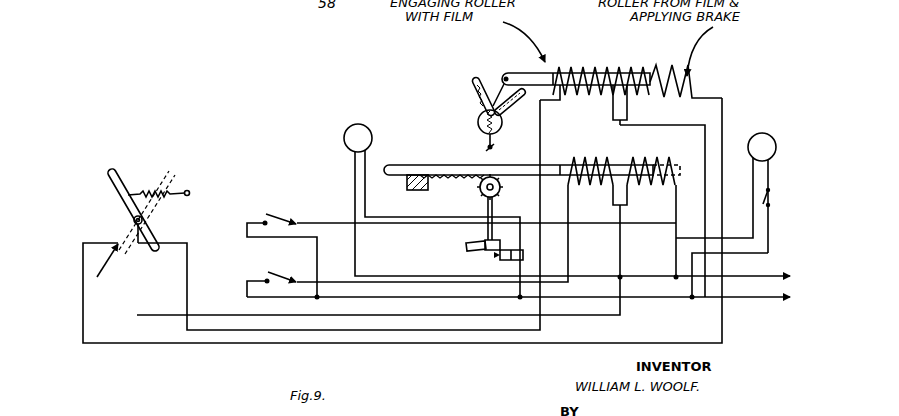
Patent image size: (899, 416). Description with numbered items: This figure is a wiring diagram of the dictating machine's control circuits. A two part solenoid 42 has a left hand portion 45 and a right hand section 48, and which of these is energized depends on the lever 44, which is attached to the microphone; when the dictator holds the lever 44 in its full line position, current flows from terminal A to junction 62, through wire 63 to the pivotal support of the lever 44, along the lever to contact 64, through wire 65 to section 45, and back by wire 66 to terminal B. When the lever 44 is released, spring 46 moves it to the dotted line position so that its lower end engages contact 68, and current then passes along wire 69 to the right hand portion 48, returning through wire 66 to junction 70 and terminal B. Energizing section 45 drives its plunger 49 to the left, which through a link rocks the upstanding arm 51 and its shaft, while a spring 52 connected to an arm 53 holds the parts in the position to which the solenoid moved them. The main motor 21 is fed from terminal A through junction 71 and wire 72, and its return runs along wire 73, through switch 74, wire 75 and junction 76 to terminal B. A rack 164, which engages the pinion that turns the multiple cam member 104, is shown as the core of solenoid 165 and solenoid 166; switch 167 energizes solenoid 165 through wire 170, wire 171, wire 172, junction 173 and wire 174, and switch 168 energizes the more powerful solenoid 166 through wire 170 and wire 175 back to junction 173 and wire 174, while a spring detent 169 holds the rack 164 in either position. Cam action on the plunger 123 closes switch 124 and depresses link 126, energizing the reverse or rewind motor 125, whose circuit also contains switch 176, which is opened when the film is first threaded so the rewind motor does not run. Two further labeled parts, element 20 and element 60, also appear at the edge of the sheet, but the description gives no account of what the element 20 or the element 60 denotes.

The rack bar and pinion 20 is at (496, 180).
The motor 21 is at (772, 141).
The two part solenoid 42 is at (703, 72).
The lever 44 is at (125, 208).
The left hand portion of the solenoid 45 is at (576, 70).
The spring 46 is at (181, 190).
The right hand section of the solenoid 48 is at (657, 70).
The plunger 49 is at (620, 70).
The upstanding arm 51 is at (496, 95).
The spring 52 is at (488, 141).
The arm 53 is at (474, 84).
The part 60 is at (124, 12).
The junction 62 is at (622, 277).
The wire 63 is at (378, 316).
The contact 64 is at (160, 246).
The wire 65 is at (540, 200).
The wire 66 is at (658, 127).
The contact 68 is at (105, 267).
The wire 69 is at (723, 114).
The junction 70 is at (705, 300).
The junction 71 is at (676, 279).
The wire 72 is at (753, 200).
The wire 73 is at (769, 176).
The switch 74 is at (772, 198).
The wire 75 is at (748, 260).
The junction 76 is at (690, 300).
The multiple cam member 104 is at (181, 0).
The plunger 123 is at (486, 232).
The switch 124 is at (500, 262).
The reverse or rewind motor 125 is at (372, 137).
The link 126 is at (466, 246).
The rack 164 is at (410, 172).
The solenoid 165 is at (660, 157).
The solenoid 166 is at (572, 157).
The switch 167 is at (300, 204).
The switch 168 is at (290, 266).
The spring detent 169 is at (428, 182).
The wire 170 is at (622, 243).
The wire 171 is at (577, 226).
The wire 172 is at (317, 248).
The junction 173 is at (317, 297).
The wire 174 is at (455, 297).
The wire 175 is at (568, 210).
The switch 176 is at (398, 207).